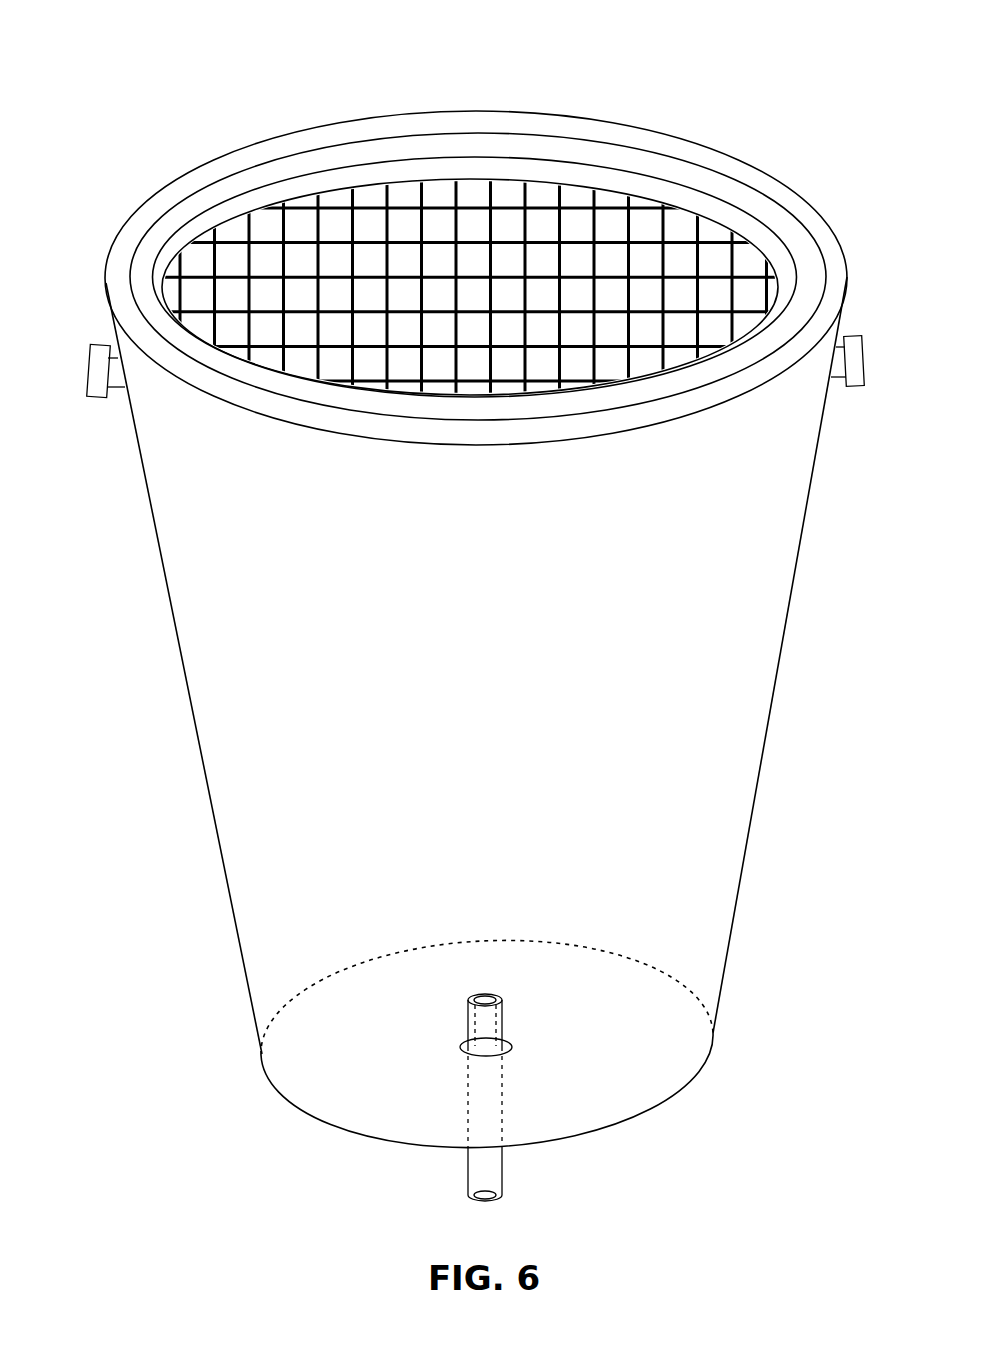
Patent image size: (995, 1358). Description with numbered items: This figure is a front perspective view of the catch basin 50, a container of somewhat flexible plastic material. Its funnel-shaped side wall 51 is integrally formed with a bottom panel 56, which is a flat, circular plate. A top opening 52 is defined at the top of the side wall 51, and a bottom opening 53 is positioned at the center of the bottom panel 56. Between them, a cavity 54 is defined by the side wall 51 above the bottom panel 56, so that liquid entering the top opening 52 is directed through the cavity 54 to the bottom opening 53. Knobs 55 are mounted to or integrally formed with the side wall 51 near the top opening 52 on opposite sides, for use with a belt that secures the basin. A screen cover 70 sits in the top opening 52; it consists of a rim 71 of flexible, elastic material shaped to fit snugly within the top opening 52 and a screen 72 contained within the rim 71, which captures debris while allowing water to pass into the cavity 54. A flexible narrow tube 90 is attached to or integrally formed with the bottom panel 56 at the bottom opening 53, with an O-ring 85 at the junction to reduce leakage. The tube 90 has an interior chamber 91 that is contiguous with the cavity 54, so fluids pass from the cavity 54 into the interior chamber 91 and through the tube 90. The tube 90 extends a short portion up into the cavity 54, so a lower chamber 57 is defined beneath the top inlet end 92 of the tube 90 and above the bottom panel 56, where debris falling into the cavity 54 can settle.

The catch basin 50 is at (96, 98).
The side wall 51 is at (780, 646).
The top opening 52 is at (241, 134).
The bottom opening 53 is at (516, 1054).
The cavity 54 is at (496, 796).
The knobs 55 is at (95, 370).
The bottom panel 56 is at (282, 1038).
The lower chamber 57 is at (698, 968).
The screen cover 70 is at (570, 150).
The rim 71 is at (806, 303).
The screen 72 is at (445, 222).
The O-ring 85 is at (463, 1047).
The narrow tube 90 is at (472, 1177).
The interior chamber 91 is at (478, 1023).
The top inlet end 92 is at (500, 1000).